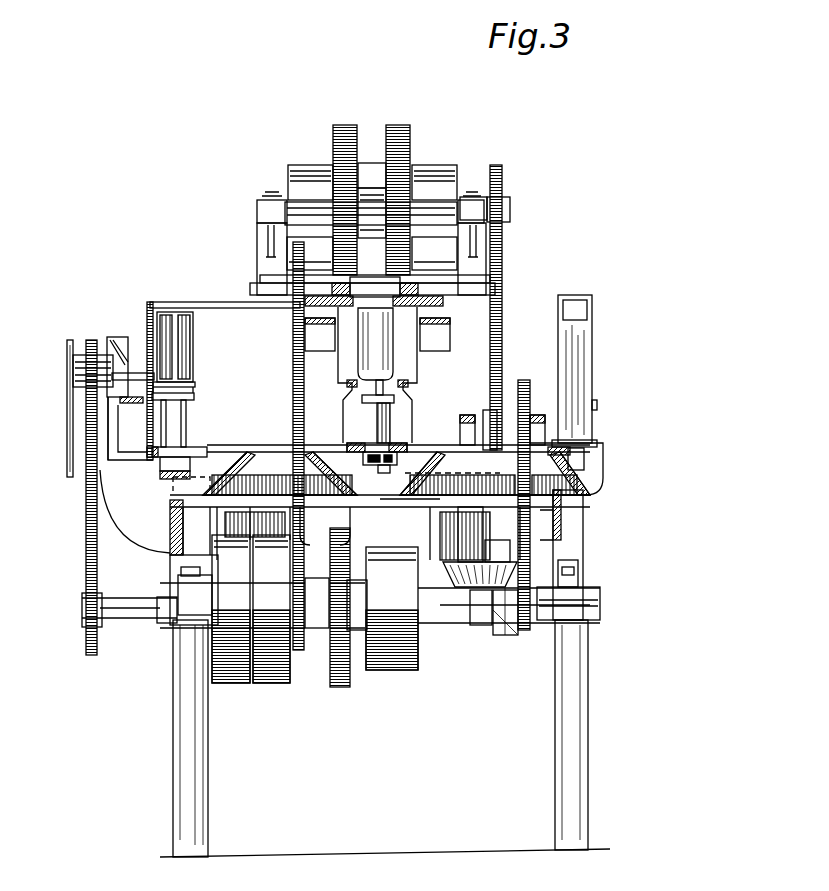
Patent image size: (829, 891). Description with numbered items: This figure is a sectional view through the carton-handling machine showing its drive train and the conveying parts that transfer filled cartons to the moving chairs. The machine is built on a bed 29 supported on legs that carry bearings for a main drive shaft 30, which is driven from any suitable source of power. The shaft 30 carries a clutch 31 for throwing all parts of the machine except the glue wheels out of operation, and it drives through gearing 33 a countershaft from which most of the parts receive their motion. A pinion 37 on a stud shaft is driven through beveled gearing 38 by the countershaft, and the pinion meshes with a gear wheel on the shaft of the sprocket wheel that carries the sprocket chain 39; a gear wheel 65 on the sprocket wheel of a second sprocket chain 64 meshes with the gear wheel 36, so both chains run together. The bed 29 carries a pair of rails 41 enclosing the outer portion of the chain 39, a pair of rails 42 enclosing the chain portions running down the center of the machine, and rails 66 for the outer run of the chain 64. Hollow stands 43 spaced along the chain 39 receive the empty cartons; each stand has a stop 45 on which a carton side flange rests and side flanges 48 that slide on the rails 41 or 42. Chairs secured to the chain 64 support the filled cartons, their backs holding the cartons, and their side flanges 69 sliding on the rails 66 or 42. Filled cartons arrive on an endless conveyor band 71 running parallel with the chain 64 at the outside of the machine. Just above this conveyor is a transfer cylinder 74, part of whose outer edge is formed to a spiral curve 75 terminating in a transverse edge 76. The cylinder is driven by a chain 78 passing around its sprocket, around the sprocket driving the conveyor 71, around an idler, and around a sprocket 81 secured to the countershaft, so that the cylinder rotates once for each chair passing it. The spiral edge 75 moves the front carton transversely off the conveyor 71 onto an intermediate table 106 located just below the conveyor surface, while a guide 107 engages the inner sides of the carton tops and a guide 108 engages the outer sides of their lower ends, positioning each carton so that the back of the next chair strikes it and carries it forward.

The bed 29 is at (440, 543).
The main drive shaft 30 is at (315, 593).
The clutch 31 is at (398, 670).
The gearing 33 is at (338, 688).
The gear wheel 36 is at (437, 498).
The pinion 37 is at (470, 478).
The beveled gearing 38 is at (504, 627).
The sprocket chain 39 is at (393, 467).
The rails 41 is at (555, 443).
The rails 42 is at (356, 444).
The hollow stand 43 is at (584, 355).
The stop 45 is at (598, 405).
The side flanges 48 is at (592, 440).
The sprocket chain 64 is at (363, 461).
The gear wheel 65 is at (263, 477).
The rails 66 is at (196, 453).
The side flanges 69 is at (193, 453).
The endless conveyor band 71 is at (68, 402).
The transfer cylinder 74 is at (108, 380).
The spiral curve 75 is at (133, 345).
The transverse edge 76 is at (127, 352).
The chain 78 is at (86, 553).
The sprocket 81 is at (91, 634).
The intermediate table 106 is at (168, 390).
The guide 107 is at (211, 302).
The guide 108 is at (183, 384).